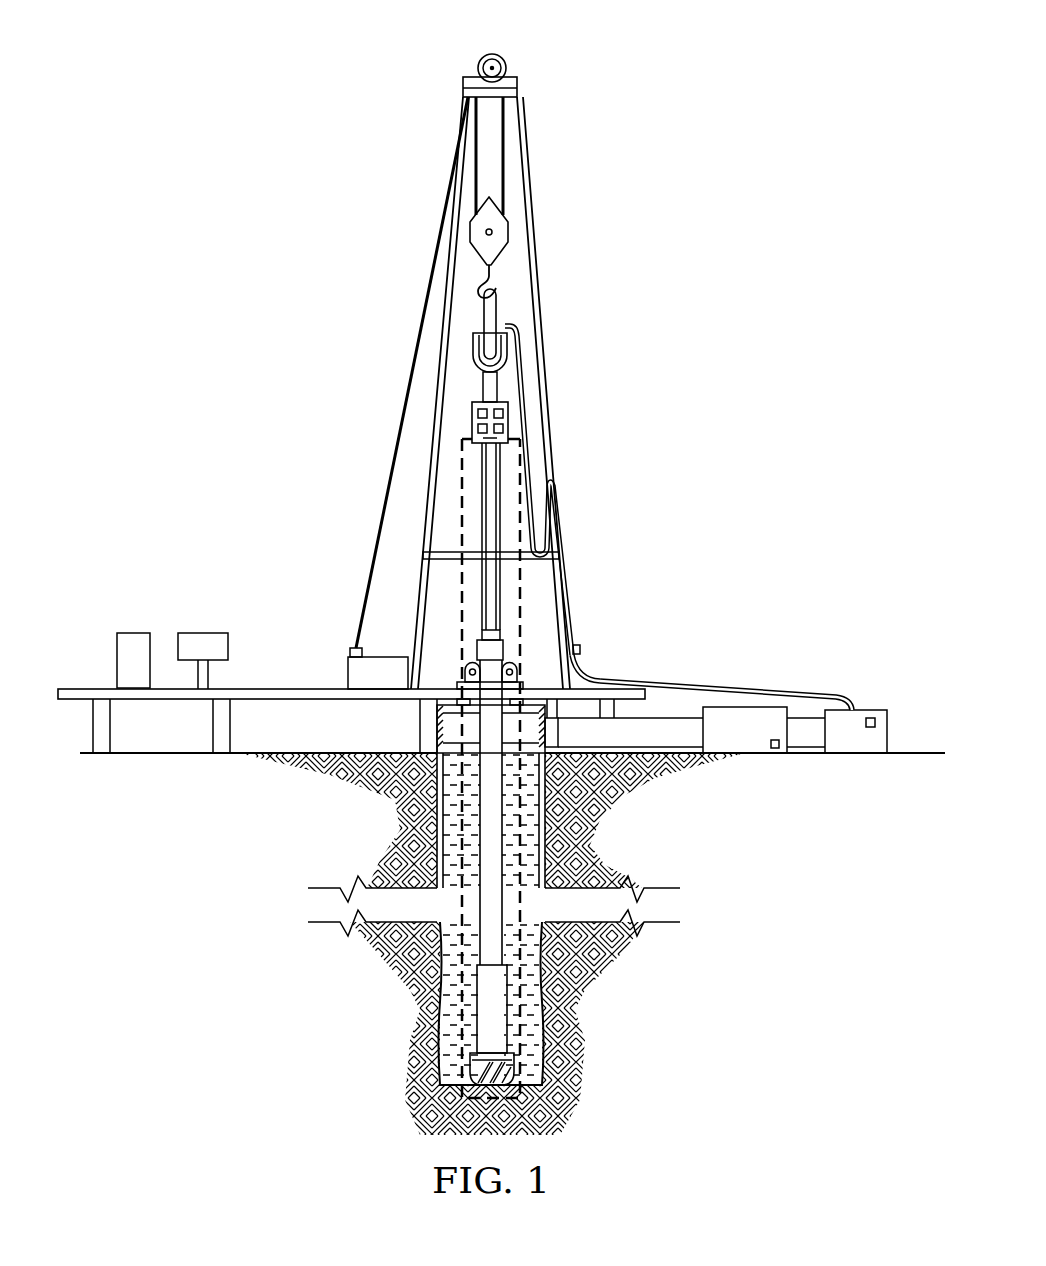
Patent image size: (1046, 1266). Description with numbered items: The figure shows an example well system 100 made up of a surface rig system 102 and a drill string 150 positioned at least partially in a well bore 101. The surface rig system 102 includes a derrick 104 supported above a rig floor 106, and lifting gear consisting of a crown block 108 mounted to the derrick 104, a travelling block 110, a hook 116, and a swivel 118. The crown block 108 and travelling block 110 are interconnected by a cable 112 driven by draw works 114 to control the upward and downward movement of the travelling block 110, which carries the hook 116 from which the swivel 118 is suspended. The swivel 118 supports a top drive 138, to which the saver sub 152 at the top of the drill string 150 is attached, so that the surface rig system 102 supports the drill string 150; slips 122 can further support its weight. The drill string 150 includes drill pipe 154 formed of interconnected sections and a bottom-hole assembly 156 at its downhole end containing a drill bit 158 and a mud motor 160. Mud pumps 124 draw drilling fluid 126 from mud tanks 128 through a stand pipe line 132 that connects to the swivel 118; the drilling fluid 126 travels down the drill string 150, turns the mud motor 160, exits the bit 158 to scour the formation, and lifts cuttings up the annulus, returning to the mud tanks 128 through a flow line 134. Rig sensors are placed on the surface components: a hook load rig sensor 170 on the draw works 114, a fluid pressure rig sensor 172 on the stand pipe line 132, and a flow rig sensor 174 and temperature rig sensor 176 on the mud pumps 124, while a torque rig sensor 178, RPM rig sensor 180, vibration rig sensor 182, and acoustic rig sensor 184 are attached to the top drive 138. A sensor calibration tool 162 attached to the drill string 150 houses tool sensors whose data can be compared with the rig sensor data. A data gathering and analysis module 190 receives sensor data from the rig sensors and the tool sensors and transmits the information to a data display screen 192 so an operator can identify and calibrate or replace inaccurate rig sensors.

The well system 100 is at (185, 146).
The well bore 101 is at (545, 958).
The surface rig system 102 is at (676, 239).
The derrick 104 is at (525, 174).
The rig floor 106 is at (78, 688).
The crown block 108 is at (483, 56).
The travelling block 110 is at (509, 234).
The cable 112 is at (445, 210).
The draw works 114 is at (382, 682).
The hook 116 is at (477, 288).
The swivel 118 is at (473, 347).
The slips 122 is at (588, 672).
The mud pumps 124 is at (890, 728).
The drilling fluid 126 is at (445, 825).
The mud tanks 128 is at (742, 757).
The stand pipe line 132 is at (710, 680).
The flow line 134 is at (683, 737).
The top drive 138 is at (527, 362).
The drill string 150 is at (448, 495).
The saver sub 152 is at (500, 457).
The drill pipe 154 is at (493, 836).
The bottom-hole assembly 156 is at (500, 1013).
The drill bit 158 is at (513, 1067).
The mud motor 160 is at (472, 1008).
The sensor calibration tool 162 is at (477, 650).
The hook load rig sensor 170 is at (350, 651).
The fluid pressure rig sensor 172 is at (582, 645).
The flow rig sensor 174 is at (871, 716).
The temperature rig sensor 176 is at (776, 751).
The torque rig sensor 178 is at (473, 412).
The RPM rig sensor 180 is at (472, 431).
The vibration rig sensor 182 is at (500, 412).
The acoustic rig sensor 184 is at (502, 429).
The data gathering and analysis module 190 is at (133, 633).
The data display screen 192 is at (201, 633).